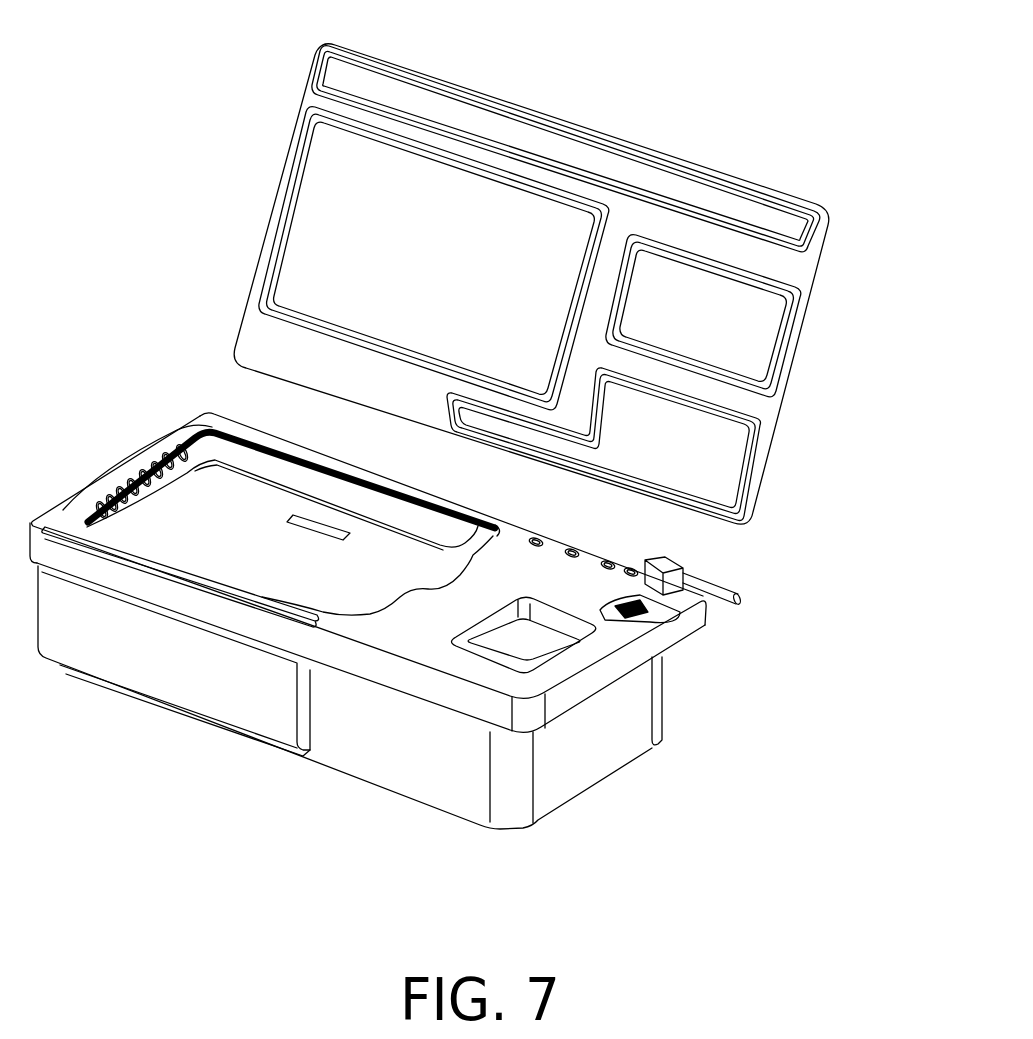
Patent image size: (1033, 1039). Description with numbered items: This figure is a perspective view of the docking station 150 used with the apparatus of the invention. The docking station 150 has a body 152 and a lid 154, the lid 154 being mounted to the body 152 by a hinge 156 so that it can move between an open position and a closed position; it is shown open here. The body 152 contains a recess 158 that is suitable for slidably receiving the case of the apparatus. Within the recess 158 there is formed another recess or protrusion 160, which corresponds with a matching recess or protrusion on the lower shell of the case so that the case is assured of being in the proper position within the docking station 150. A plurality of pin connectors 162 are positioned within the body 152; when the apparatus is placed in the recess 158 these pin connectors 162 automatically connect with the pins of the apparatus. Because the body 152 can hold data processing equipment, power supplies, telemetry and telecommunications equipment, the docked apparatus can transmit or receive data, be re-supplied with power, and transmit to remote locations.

The docking station 150 is at (623, 82).
The body 152 is at (585, 763).
The lid 154 is at (762, 499).
The hinge 156 is at (741, 596).
The recess 158 is at (212, 497).
The recess or protrusion 160 is at (307, 530).
The pin connectors 162 is at (117, 476).